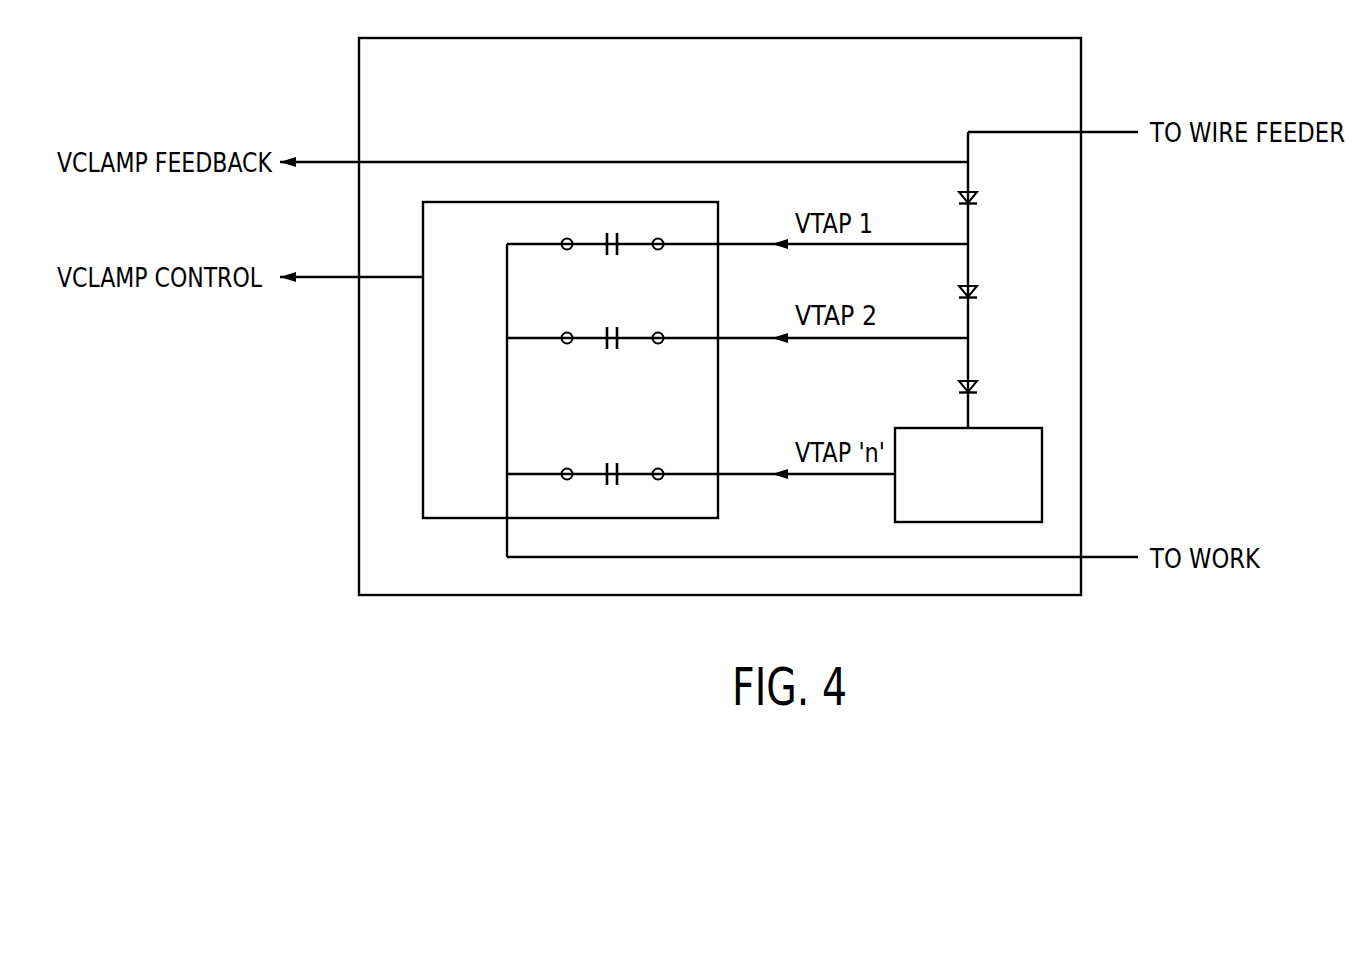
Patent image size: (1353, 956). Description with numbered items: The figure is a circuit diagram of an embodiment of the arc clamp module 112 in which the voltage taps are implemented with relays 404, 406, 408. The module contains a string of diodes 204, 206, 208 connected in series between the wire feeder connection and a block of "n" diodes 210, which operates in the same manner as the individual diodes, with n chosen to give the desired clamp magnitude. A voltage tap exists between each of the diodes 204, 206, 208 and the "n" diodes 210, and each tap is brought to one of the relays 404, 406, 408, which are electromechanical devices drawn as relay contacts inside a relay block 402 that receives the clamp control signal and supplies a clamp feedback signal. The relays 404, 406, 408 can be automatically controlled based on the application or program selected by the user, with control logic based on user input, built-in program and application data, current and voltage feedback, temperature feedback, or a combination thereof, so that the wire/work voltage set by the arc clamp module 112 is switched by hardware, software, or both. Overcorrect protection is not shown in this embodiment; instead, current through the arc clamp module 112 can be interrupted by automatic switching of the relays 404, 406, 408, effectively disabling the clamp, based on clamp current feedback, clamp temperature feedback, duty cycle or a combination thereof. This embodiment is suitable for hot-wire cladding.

The arc clamp module 112 is at (1081, 77).
The diode 204 is at (977, 200).
The diode 206 is at (977, 294).
The diode 208 is at (977, 388).
The "n" diodes 210 is at (1042, 472).
The voltage clamp control circuit 402 is at (423, 358).
The relay 404 is at (605, 250).
The relay 406 is at (605, 346).
The relay 408 is at (605, 467).